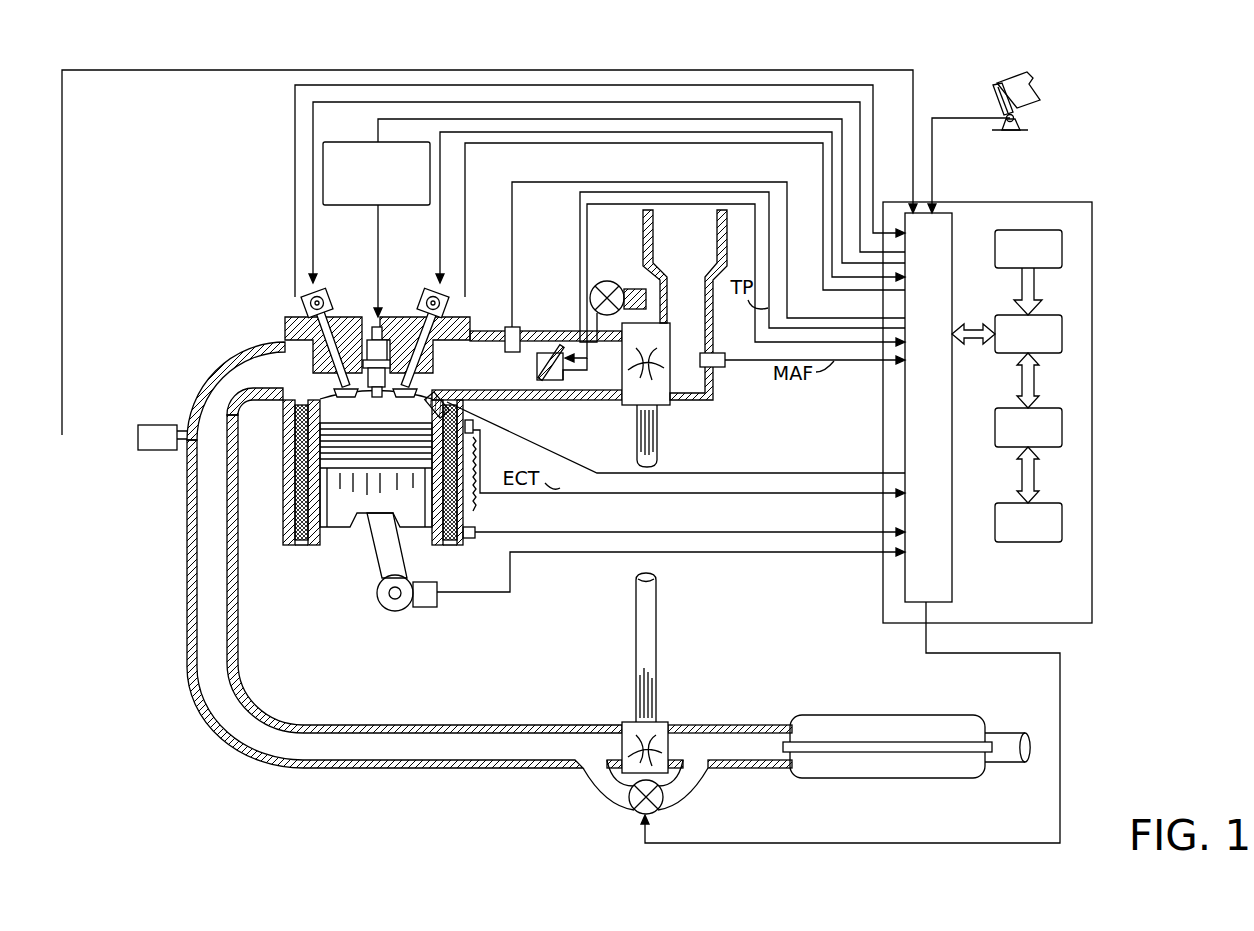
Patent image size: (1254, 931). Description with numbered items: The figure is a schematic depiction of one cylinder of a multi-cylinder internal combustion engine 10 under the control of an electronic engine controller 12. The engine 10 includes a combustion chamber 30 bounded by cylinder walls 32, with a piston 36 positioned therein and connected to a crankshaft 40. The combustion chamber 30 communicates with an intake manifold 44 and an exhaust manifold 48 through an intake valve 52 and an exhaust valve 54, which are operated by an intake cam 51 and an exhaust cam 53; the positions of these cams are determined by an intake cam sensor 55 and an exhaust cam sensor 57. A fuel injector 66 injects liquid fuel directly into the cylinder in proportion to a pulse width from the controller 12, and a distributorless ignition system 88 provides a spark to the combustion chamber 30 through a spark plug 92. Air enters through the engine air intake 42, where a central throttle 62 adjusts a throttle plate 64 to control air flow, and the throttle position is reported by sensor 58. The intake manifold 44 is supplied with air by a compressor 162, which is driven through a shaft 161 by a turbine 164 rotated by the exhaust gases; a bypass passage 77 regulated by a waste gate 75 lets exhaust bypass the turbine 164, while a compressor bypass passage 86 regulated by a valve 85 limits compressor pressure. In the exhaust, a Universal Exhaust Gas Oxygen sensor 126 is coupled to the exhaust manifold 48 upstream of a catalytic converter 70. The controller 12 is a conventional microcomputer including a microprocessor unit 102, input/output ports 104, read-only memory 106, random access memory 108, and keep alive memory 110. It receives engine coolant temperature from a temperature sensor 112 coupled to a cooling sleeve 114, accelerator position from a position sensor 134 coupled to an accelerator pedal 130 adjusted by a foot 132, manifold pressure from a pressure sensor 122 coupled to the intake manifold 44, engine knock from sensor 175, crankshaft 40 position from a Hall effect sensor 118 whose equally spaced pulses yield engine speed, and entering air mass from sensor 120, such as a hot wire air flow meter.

The internal combustion engine 10 is at (222, 273).
The electronic engine controller 12 is at (1092, 204).
The combustion chamber 30 is at (375, 410).
The cylinder walls 32 is at (323, 540).
The piston 36 is at (362, 497).
The crankshaft 40 is at (387, 607).
The engine air intake 42 is at (675, 253).
The intake manifold 44 is at (485, 375).
The exhaust manifold 48 is at (243, 387).
The intake cam 51 is at (440, 268).
The intake valve 52 is at (398, 333).
The exhaust cam 53 is at (318, 268).
The exhaust valve 54 is at (322, 345).
The intake cam sensor 55 is at (448, 307).
The exhaust cam sensor 57 is at (304, 305).
The throttle position sensor 58 is at (563, 382).
The central throttle 62 is at (543, 353).
The throttle plate 64 is at (563, 344).
The fuel injector 66 is at (452, 416).
The catalytic converter 70 is at (797, 777).
The waste gate 75 is at (650, 815).
The bypass passage 77 is at (596, 788).
The valve 85 is at (601, 283).
The compressor bypass passage 86 is at (647, 289).
The distributorless ignition system 88 is at (336, 148).
The spark plug 92 is at (367, 322).
The microprocessor unit 102 is at (1062, 331).
The input/output ports 104 is at (955, 228).
The read-only memory 106 is at (1062, 247).
The random access memory 108 is at (1062, 426).
The keep alive memory 110 is at (1062, 522).
The temperature sensor 112 is at (474, 500).
The cooling sleeve 114 is at (463, 547).
The Hall effect sensor 118 is at (420, 607).
The air mass sensor 120 is at (720, 353).
The pressure sensor 122 is at (522, 327).
The Universal Exhaust Gas Oxygen sensor 126 is at (140, 428).
The accelerator pedal 130 is at (995, 97).
The foot 132 is at (1038, 84).
The position sensor 134 is at (1020, 120).
The shaft 161 is at (657, 455).
The compressor 162 is at (669, 406).
The turbine 164 is at (622, 722).
The knock sensor 175 is at (470, 540).